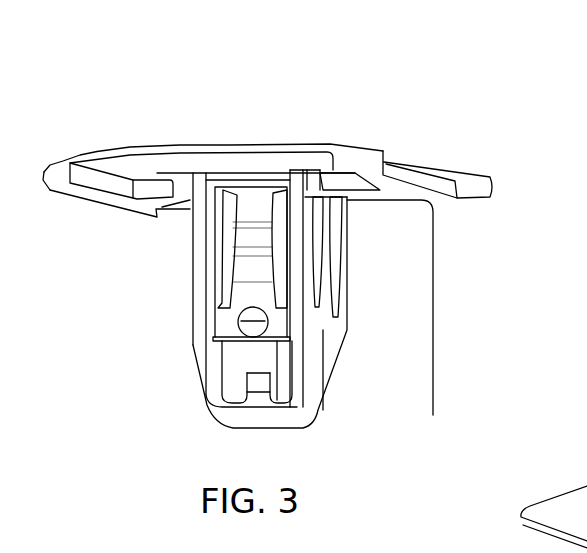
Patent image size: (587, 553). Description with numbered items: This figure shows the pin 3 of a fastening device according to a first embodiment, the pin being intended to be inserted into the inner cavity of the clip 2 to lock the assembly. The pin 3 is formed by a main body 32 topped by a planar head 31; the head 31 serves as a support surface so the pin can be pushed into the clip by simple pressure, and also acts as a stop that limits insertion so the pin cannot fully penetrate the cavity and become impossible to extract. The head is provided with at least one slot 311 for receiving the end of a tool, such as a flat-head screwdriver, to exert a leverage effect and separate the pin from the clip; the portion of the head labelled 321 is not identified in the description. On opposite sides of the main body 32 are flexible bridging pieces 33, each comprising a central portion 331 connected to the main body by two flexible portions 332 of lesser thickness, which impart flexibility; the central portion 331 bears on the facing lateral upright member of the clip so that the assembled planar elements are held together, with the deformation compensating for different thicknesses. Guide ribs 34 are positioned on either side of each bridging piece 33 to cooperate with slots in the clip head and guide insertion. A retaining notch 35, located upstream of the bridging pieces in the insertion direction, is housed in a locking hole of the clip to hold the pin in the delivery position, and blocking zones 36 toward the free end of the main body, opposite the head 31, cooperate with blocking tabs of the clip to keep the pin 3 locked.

The pin 3 is at (490, 248).
The planar head 31 is at (291, 120).
The slot 311 is at (427, 170).
The left tab of head 321 is at (130, 168).
The main body 32 is at (433, 305).
The flexible bridging piece 33 is at (228, 308).
The central portion 331 is at (306, 333).
The flexible portion 332 is at (260, 212).
The guide rib 34 is at (295, 187).
The retaining notch 35 is at (250, 319).
The blocking zone 36 is at (255, 367).
The clip 2 is at (554, 497).